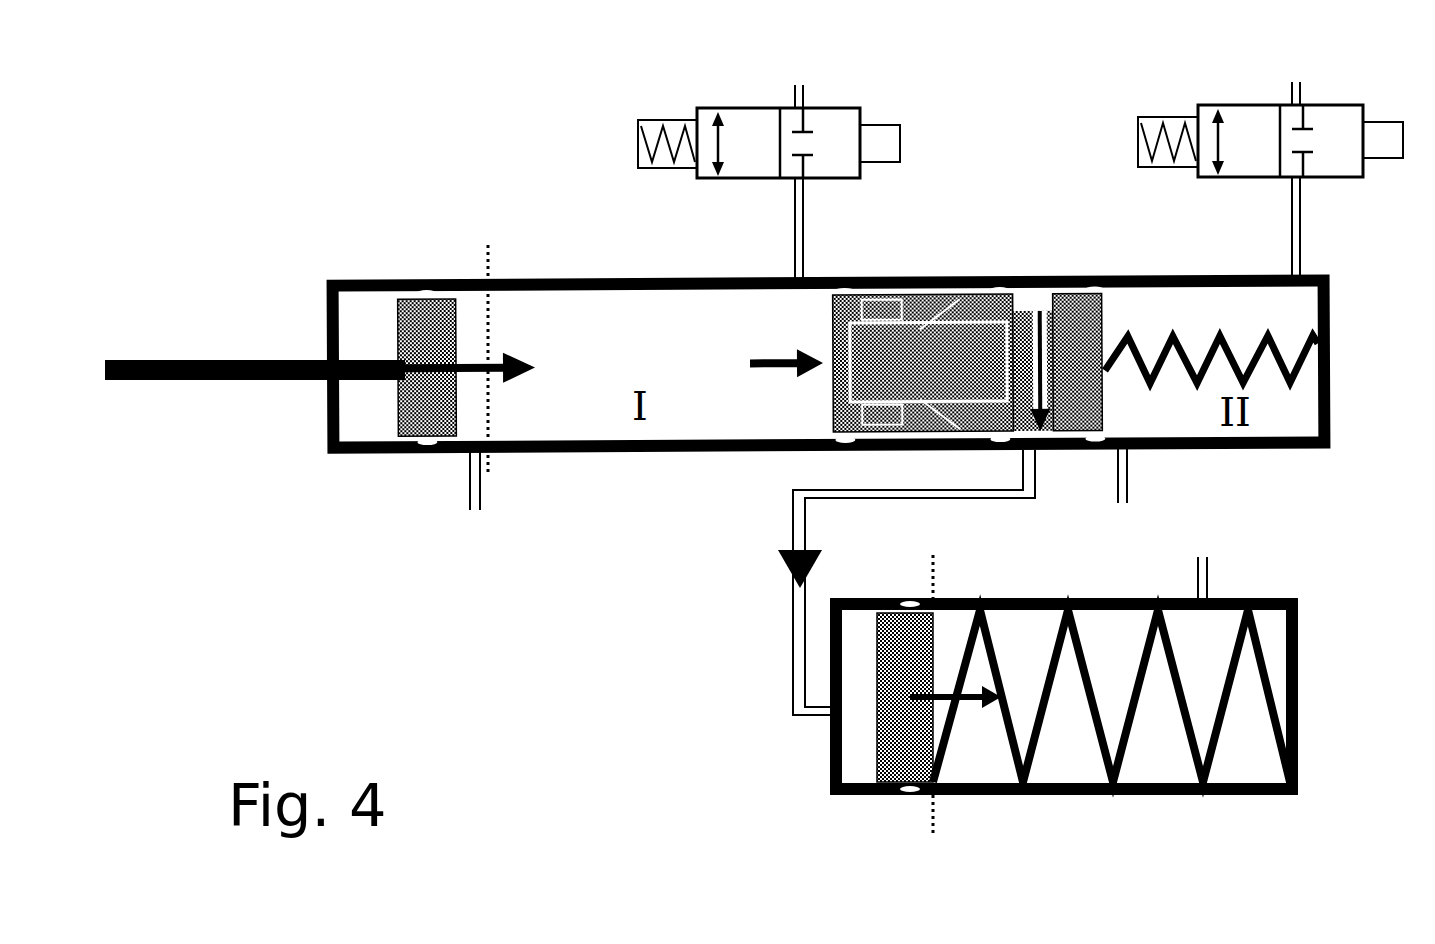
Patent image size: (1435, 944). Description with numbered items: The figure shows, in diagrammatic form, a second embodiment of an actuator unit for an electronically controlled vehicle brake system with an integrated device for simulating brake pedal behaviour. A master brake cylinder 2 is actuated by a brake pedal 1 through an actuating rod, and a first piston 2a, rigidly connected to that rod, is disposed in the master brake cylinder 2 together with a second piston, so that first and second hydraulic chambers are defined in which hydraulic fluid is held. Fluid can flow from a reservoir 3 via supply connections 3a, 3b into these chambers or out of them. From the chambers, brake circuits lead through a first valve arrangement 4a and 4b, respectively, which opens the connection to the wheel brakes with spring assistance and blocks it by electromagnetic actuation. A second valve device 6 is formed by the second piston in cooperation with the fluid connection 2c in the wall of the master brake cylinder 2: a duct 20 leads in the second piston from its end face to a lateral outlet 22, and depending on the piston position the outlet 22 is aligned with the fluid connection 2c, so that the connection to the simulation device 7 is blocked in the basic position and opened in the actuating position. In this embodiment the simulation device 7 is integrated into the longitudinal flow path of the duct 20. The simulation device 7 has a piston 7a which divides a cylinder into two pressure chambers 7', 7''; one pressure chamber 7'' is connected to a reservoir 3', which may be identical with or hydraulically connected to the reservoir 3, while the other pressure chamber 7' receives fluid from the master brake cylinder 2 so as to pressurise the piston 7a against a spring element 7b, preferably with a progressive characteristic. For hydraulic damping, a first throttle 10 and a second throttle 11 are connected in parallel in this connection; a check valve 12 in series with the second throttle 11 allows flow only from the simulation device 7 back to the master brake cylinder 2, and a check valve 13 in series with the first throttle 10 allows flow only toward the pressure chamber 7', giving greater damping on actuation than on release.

The brake pedal 1 is at (253, 380).
The master brake cylinder 2 is at (597, 452).
The first piston 2a is at (418, 283).
The fluid connection 2c is at (1027, 453).
The reservoir 3 is at (798, 508).
The reservoir 3' is at (1204, 556).
The supply connection 3a is at (470, 483).
The supply connection 3b is at (1127, 468).
The first valve arrangement 4a is at (840, 182).
The first valve arrangement 4b is at (1337, 177).
The second valve device 6 is at (1052, 478).
The simulation device 7 is at (1064, 672).
The pressure chamber 7' is at (772, 811).
The pressure chamber 7'' is at (1277, 845).
The piston 7a is at (890, 760).
The spring element 7b is at (1093, 737).
The first throttle 10 is at (880, 295).
The second throttle 11 is at (878, 425).
The check valve 12 is at (940, 453).
The check valve 13 is at (970, 280).
The duct 20 is at (830, 385).
The lateral outlet 22 is at (1102, 410).